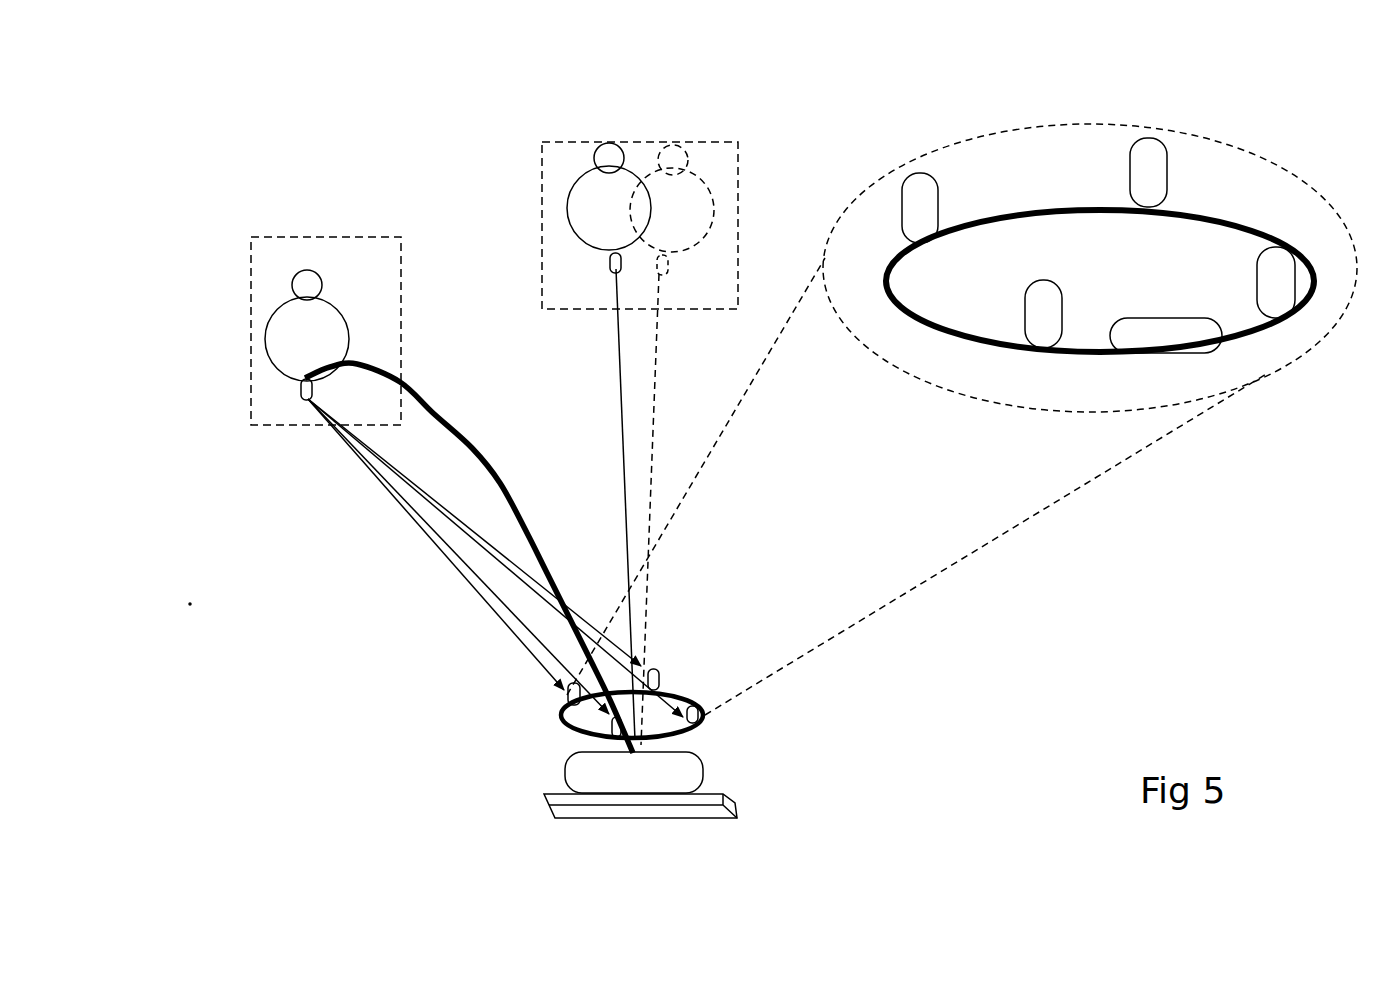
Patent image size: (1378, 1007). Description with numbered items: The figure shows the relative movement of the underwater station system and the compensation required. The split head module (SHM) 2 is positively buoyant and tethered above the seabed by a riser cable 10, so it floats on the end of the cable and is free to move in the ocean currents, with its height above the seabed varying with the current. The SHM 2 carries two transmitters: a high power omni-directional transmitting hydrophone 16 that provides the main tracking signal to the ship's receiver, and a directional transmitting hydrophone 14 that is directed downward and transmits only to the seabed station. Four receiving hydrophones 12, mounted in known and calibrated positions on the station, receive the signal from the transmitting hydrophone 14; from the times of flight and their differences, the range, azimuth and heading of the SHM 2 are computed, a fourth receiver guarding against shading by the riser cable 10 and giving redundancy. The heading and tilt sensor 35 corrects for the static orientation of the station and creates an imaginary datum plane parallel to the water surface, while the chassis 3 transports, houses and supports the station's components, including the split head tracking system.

The split head module (SHM) 2 is at (459, 311).
The chassis 3 is at (565, 770).
The riser cable 10 is at (473, 450).
The receiving hydrophone 12 is at (568, 690).
The transmitting hydrophone 14 is at (305, 400).
The transmitting hydrophone 16 is at (297, 282).
The heading and tilt sensor 35 is at (1183, 353).